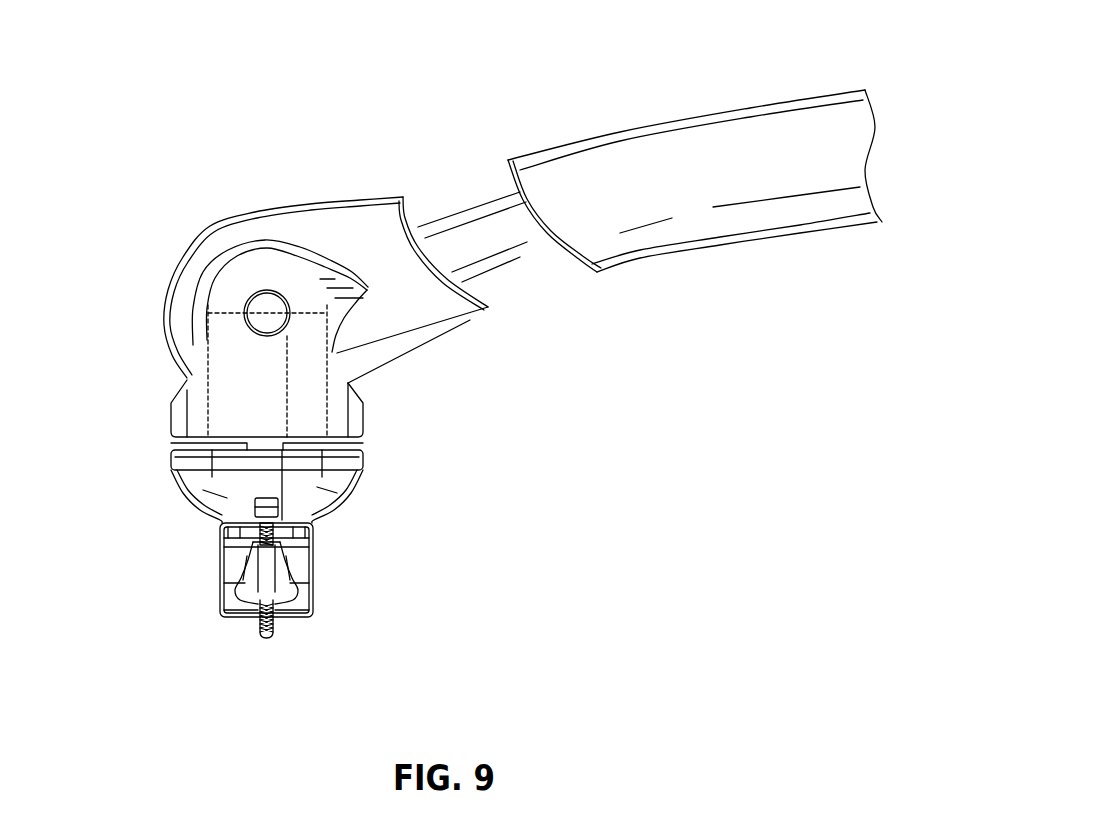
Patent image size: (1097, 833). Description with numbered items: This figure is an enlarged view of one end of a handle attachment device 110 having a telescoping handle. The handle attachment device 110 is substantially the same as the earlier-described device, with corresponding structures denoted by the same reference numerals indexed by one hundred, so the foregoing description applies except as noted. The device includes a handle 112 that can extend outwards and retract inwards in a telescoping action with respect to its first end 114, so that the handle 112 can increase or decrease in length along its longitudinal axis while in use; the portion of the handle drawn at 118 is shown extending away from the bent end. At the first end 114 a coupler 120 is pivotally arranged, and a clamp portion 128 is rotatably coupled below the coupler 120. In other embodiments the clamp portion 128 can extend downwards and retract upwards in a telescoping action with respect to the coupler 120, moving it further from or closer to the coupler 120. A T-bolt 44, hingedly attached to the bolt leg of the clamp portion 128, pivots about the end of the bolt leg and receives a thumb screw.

The handle attachment device 110 is at (264, 86).
The handle 112 is at (559, 117).
The first end 114 is at (192, 277).
The tube 118 is at (733, 128).
The coupler 120 is at (143, 412).
The clamp portion 128 is at (350, 563).
The T-bolt 44 is at (273, 633).